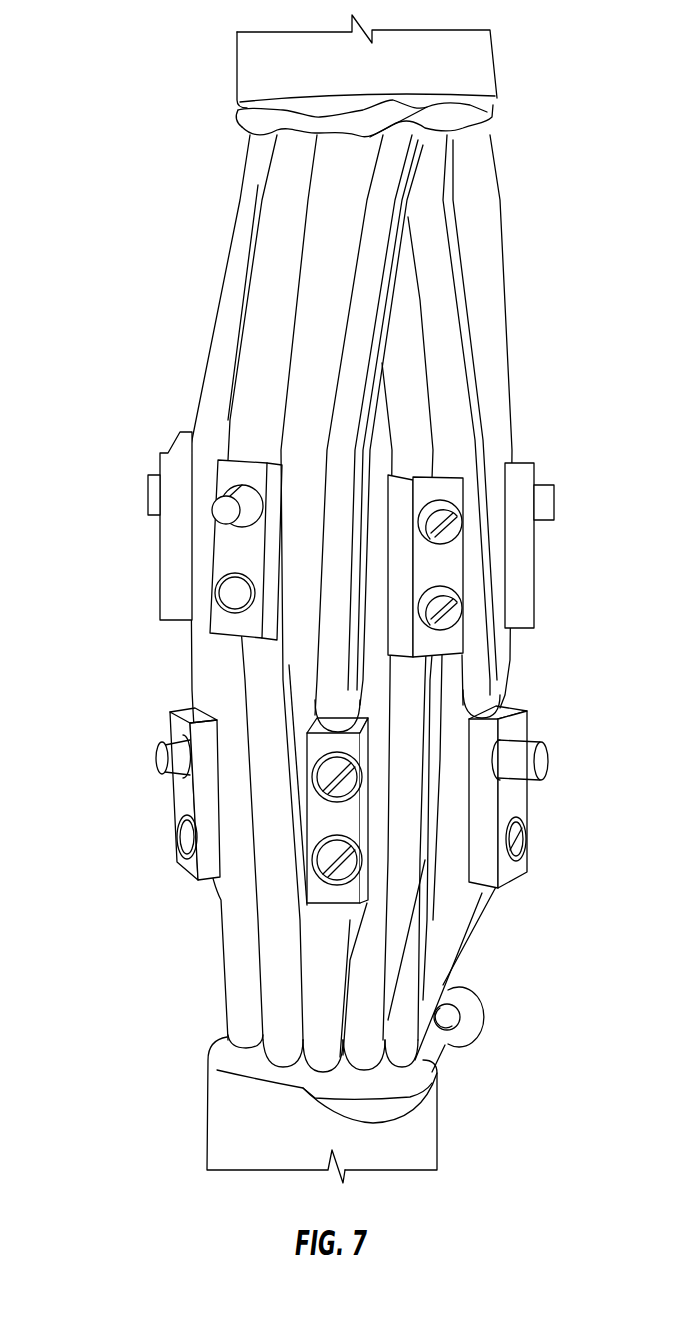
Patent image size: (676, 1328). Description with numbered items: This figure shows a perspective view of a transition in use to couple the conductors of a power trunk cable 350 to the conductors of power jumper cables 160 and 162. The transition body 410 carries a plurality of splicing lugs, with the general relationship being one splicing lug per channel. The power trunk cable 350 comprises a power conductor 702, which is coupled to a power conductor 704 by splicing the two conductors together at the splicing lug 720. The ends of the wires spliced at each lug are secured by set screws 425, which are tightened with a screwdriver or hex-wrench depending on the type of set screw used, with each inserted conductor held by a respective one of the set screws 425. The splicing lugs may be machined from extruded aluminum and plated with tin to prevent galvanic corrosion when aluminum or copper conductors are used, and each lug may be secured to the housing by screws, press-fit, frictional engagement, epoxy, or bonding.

The power trunk cable 350 is at (306, 70).
The power conductor 702 is at (335, 363).
The set screws 425 is at (198, 507).
The splicing lug 720 is at (306, 820).
The transition body 410 is at (236, 902).
The power conductor 704 is at (315, 1015).
The power jumper cable 160 is at (261, 1154).
The power jumper cable 162 is at (408, 1165).